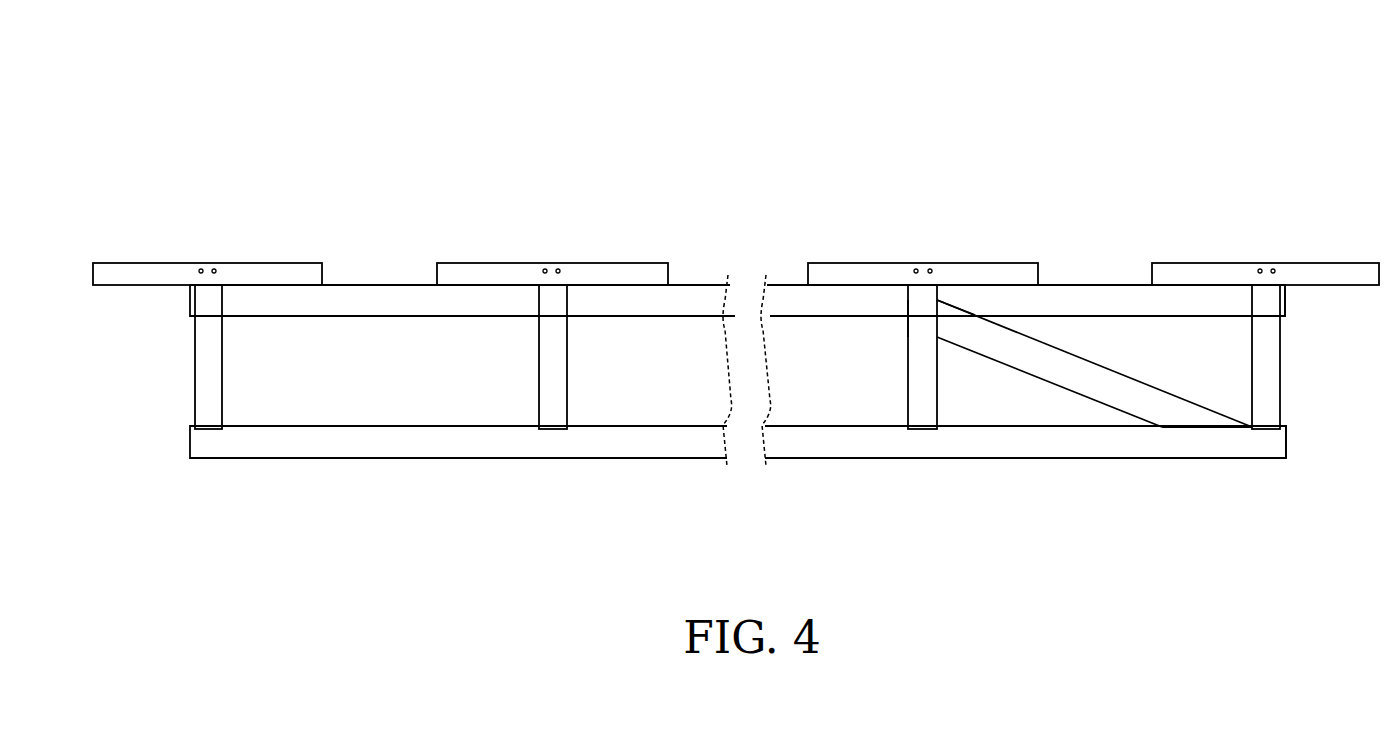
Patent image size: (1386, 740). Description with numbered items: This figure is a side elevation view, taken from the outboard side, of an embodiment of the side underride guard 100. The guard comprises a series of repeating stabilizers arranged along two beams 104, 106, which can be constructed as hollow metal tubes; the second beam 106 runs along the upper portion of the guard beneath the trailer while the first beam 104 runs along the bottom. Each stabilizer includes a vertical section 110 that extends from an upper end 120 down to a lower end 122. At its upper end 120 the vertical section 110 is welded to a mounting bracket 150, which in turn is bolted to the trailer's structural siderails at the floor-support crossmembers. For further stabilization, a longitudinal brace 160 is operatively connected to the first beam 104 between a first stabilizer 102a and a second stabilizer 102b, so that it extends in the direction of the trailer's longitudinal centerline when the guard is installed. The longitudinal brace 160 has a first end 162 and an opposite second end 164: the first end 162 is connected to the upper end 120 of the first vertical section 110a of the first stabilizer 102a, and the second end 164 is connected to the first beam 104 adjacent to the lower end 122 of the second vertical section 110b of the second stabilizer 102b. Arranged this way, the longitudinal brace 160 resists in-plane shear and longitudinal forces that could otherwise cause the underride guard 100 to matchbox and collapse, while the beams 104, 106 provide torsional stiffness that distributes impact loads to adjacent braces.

The side underride guard 100 is at (1078, 170).
The first stabilizer 102a is at (898, 388).
The second stabilizer 102b is at (1246, 338).
The first beam 104 is at (1072, 460).
The second beam 106 is at (692, 277).
The vertical section 110 is at (187, 378).
The first vertical section 110a is at (908, 338).
The second vertical section 110b is at (1274, 344).
The upper end 120 is at (898, 322).
The lower end 122 is at (1293, 417).
The mounting bracket 150 is at (262, 256).
The longitudinal brace 160 is at (1005, 347).
The first end 162 is at (963, 304).
The second end 164 is at (1215, 430).